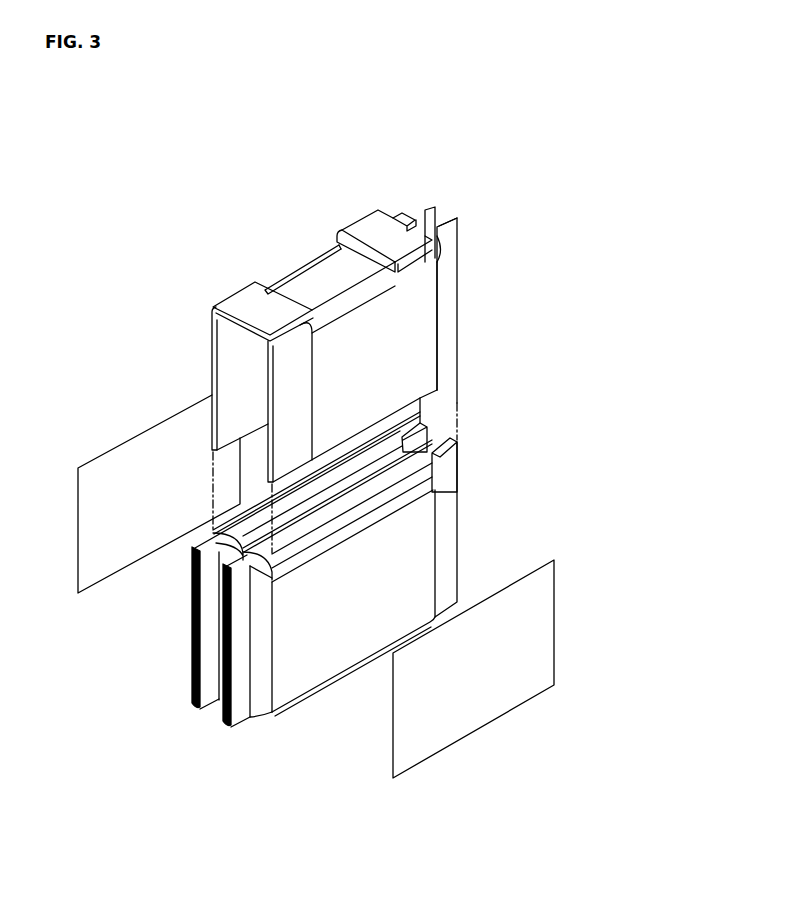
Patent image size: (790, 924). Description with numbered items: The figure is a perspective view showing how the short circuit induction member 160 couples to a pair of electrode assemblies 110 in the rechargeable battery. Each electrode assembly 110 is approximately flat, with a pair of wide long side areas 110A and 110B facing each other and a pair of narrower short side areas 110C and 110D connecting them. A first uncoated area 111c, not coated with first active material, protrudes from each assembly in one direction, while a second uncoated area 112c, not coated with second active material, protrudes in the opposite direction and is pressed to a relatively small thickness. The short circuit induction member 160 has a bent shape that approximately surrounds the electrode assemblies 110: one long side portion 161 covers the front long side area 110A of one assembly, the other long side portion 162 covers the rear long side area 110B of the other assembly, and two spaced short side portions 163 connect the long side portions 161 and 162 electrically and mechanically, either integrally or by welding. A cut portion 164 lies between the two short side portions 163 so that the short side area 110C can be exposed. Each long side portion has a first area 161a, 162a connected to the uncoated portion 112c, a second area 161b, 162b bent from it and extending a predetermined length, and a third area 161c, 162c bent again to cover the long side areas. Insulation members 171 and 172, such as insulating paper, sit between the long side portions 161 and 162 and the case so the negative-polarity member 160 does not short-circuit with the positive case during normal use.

The electrode assembly 110 is at (225, 727).
The long side area 110A is at (318, 672).
The long side area 110B is at (212, 535).
The short side area 110C is at (352, 460).
The short side area 110D is at (260, 723).
The first uncoated area 111c is at (223, 696).
The second uncoated area 112c is at (450, 462).
The short circuit induction member 160 is at (213, 186).
The long side portion 161 is at (553, 227).
The first area 161a is at (452, 238).
The second area 161b is at (440, 252).
The third area 161c is at (428, 309).
The long side portion 162 is at (474, 142).
The first area 162a is at (428, 208).
The second area 162b is at (402, 212).
The third area 162c is at (318, 256).
The short side portion 163 is at (242, 305).
The cut portion 164 is at (302, 292).
The insulation member 171 is at (543, 622).
The insulation member 172 is at (128, 447).